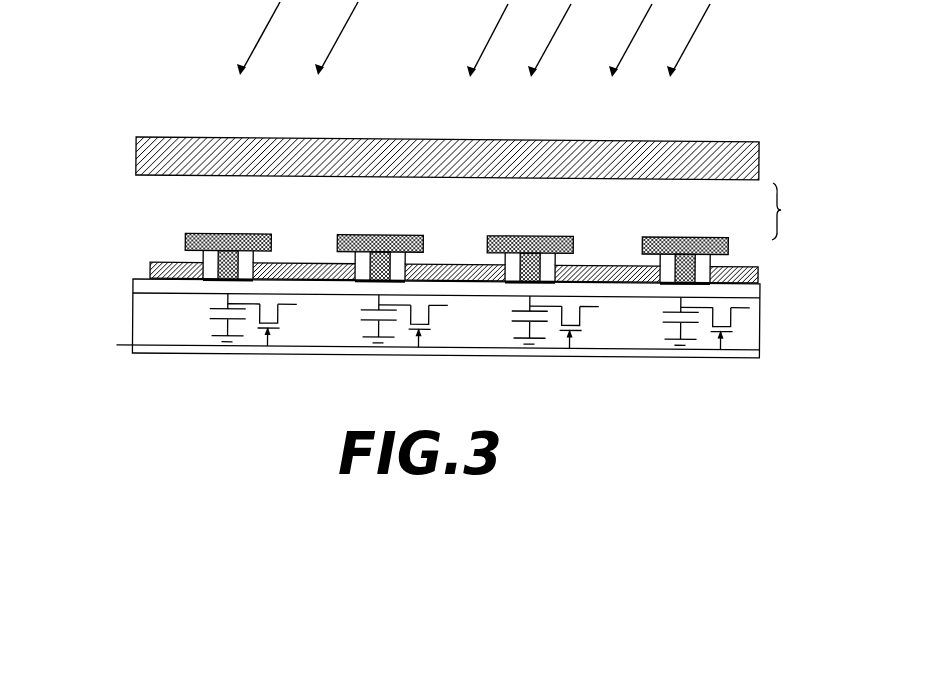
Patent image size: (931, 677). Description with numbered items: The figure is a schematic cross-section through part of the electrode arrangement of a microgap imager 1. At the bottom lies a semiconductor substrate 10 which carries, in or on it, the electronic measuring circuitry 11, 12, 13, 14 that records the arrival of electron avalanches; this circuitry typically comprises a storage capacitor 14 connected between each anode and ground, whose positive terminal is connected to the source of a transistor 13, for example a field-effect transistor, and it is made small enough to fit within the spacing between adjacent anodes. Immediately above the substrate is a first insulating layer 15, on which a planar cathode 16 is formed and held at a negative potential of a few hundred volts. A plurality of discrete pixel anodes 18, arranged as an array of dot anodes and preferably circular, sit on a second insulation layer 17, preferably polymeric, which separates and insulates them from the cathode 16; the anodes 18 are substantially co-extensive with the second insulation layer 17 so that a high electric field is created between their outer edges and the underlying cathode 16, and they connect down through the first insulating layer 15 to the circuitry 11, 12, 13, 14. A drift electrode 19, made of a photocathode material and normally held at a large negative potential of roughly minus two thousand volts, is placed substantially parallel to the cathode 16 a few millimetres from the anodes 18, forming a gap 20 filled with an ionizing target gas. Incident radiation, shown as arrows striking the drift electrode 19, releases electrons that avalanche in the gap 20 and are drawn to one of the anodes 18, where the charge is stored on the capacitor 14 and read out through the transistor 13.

The imager 1 is at (524, 43).
The semiconductor substrate 10 is at (140, 313).
The electronic measuring circuitry 11 is at (585, 308).
The electronic measuring circuitry 12 is at (650, 352).
The transistor 13 is at (268, 330).
The storage capacitor 14 is at (226, 318).
The first insulating layer 15 is at (200, 287).
The planar cathode 16 is at (150, 268).
The second insulation layer 17 is at (193, 258).
The discrete pixel anode 18 is at (225, 233).
The drift electrode 19 is at (393, 146).
The gap 20 is at (781, 210).